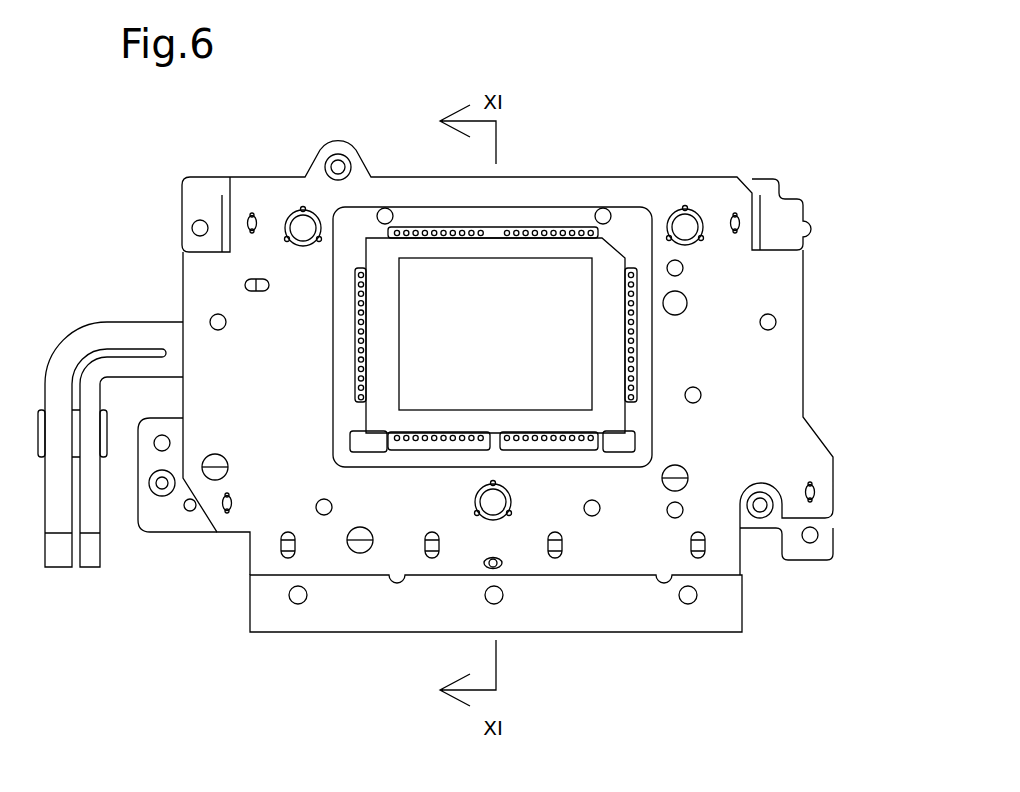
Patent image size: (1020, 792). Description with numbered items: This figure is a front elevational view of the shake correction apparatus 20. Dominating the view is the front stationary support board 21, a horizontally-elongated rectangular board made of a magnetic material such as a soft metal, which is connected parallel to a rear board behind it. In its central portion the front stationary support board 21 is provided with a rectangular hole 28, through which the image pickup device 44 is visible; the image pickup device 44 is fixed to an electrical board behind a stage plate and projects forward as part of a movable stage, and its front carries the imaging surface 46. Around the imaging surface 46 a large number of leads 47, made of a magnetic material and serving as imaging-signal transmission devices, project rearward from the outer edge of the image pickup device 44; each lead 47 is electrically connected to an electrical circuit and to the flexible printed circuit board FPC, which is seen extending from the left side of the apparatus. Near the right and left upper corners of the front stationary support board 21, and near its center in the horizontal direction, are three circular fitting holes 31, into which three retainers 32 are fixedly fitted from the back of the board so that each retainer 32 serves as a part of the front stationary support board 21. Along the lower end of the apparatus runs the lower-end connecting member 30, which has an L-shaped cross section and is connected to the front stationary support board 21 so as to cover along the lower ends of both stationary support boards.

The shake correction apparatus 20 is at (672, 140).
The front stationary support board 21 is at (793, 380).
The rectangular hole 28 is at (628, 205).
The lower-end connecting member 30 is at (680, 614).
The fitting hole 31 is at (302, 210).
The retainer 32 is at (303, 238).
The image pickup device 44 is at (603, 420).
The imaging surface 46 is at (565, 393).
The leads 47 is at (428, 230).
The flexible printed circuit board FPC is at (107, 332).